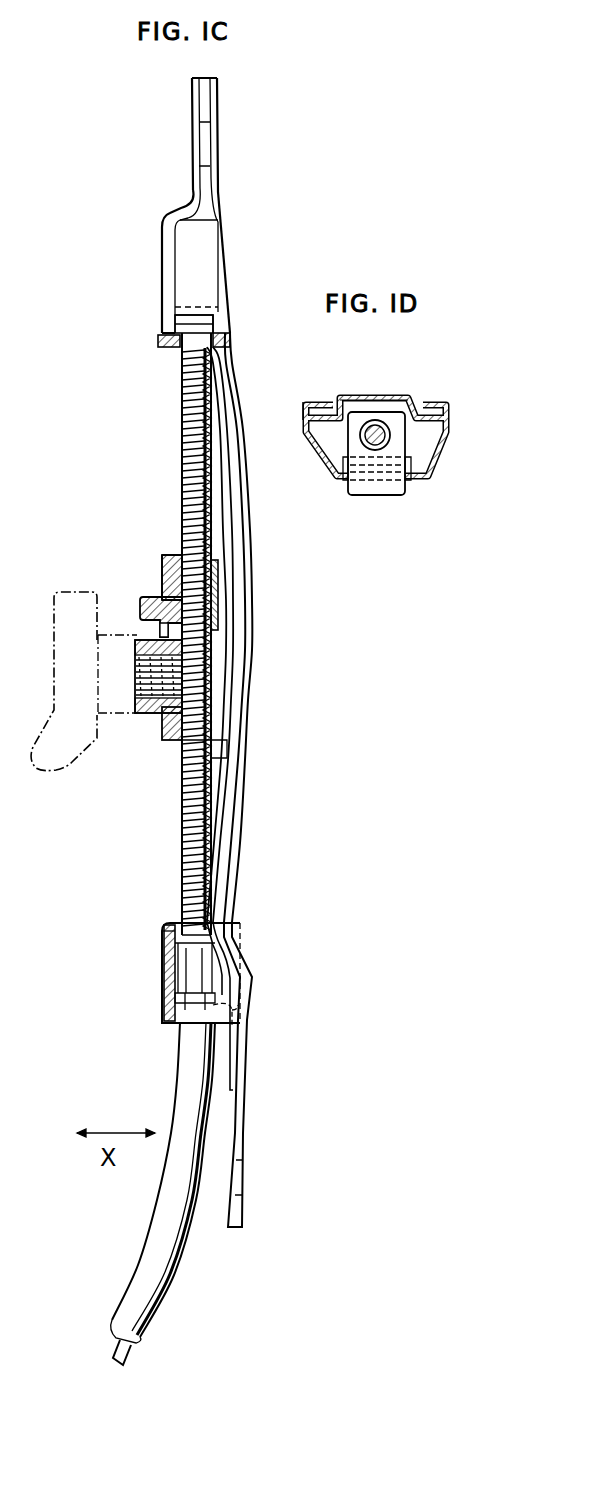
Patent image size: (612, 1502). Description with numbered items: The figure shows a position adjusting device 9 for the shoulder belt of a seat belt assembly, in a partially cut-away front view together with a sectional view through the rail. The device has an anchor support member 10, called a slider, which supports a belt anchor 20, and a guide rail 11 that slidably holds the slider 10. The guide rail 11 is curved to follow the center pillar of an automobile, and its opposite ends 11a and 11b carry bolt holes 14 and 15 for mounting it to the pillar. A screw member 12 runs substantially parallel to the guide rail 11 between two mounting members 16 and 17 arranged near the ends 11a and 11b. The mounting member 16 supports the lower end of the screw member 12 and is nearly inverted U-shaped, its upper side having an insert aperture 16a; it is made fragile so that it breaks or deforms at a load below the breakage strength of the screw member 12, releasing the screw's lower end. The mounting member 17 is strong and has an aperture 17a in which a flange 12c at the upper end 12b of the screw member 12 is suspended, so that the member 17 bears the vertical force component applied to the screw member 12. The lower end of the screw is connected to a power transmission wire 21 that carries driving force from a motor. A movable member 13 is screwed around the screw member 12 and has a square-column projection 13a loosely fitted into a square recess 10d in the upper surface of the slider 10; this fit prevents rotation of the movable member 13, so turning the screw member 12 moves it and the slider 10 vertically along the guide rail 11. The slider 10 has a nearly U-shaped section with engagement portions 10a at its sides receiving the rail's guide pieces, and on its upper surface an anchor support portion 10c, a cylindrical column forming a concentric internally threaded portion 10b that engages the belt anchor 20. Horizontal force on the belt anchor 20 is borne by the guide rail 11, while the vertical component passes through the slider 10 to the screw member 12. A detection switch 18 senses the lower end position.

In FIG. 1C, the position adjusting device 9 is at (252, 783).
In FIG. 1D, the position adjusting device 9 is at (410, 494).
In FIG. 1C, the anchor support member 10 is at (160, 717).
In FIG. 1D, the anchor support member 10 is at (430, 448).
In FIG. 1D, the engagement portions 10a is at (304, 416).
In FIG. 1C, the internally threaded portion 10b is at (136, 688).
In FIG. 1C, the anchor support portion 10c is at (160, 642).
In FIG. 1C, the square recess 10d is at (165, 572).
In FIG. 1C, the guide rail 11 is at (242, 843).
In FIG. 1D, the guide rail 11 is at (376, 406).
In FIG. 1C, the upper end of guide rail 11a is at (227, 206).
In FIG. 1C, the lower end of guide rail 11b is at (245, 1103).
In FIG. 1C, the screw member 12 is at (183, 432).
In FIG. 1D, the screw member 12 is at (382, 415).
In FIG. 1C, the upper end of screw member 12b is at (170, 326).
In FIG. 1C, the flange 12c is at (224, 322).
In FIG. 1C, the movable member 13 is at (180, 560).
In FIG. 1D, the movable member 13 is at (350, 484).
In FIG. 1C, the projection 13a is at (163, 598).
In FIG. 1C, the bolt hole 14 is at (192, 140).
In FIG. 1C, the bolt hole 15 is at (240, 1160).
In FIG. 1C, the mounting member 16 is at (164, 1010).
In FIG. 1C, the insert aperture 16a is at (166, 942).
In FIG. 1C, the mounting member 17 is at (172, 302).
In FIG. 1C, the aperture 17a is at (165, 346).
In FIG. 1C, the detection switch 18 is at (230, 1018).
In FIG. 1C, the belt anchor 20 is at (76, 600).
In FIG. 1C, the power transmission wire 21 is at (116, 1345).